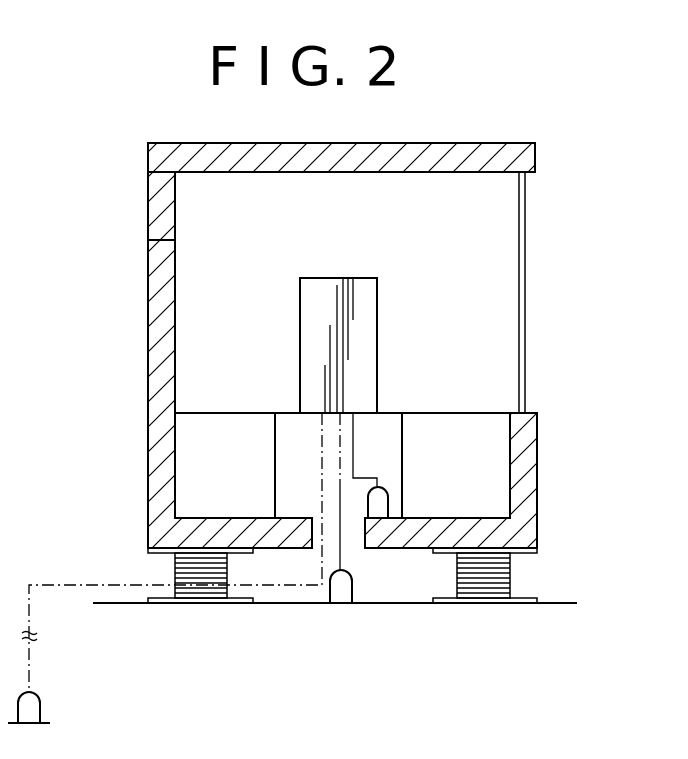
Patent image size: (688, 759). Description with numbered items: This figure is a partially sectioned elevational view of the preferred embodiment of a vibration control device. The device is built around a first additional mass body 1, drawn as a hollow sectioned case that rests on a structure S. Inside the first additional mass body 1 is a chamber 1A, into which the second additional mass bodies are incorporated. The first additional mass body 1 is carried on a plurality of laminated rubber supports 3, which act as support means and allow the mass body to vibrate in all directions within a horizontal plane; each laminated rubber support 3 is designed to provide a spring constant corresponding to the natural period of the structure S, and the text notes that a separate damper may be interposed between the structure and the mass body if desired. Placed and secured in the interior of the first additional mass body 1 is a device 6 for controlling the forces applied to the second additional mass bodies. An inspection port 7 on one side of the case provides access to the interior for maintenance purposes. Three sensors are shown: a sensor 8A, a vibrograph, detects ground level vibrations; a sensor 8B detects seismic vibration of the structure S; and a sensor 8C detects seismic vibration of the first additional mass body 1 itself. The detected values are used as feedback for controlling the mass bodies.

The first additional mass body 1 is at (160, 313).
The chamber 1A is at (248, 242).
The laminated rubber support 3 is at (173, 571).
The device for controlling forces 6 is at (305, 313).
The inspection port 7 is at (526, 296).
The sensor 8A is at (36, 712).
The sensor 8B is at (346, 588).
The sensor 8C is at (378, 512).
The structure S is at (577, 603).